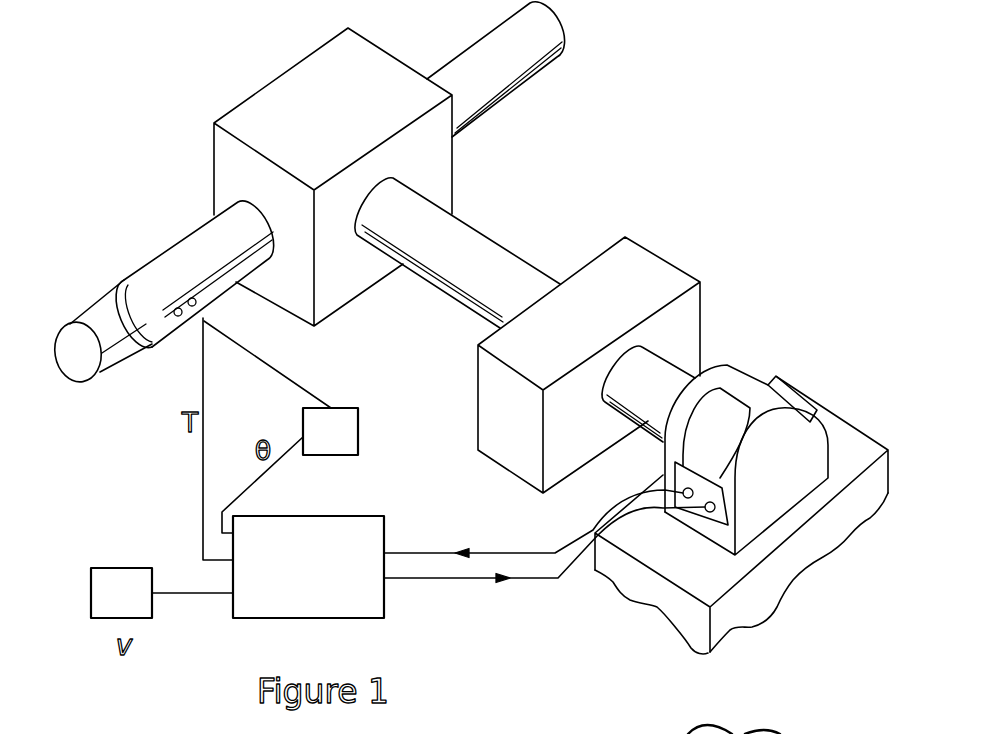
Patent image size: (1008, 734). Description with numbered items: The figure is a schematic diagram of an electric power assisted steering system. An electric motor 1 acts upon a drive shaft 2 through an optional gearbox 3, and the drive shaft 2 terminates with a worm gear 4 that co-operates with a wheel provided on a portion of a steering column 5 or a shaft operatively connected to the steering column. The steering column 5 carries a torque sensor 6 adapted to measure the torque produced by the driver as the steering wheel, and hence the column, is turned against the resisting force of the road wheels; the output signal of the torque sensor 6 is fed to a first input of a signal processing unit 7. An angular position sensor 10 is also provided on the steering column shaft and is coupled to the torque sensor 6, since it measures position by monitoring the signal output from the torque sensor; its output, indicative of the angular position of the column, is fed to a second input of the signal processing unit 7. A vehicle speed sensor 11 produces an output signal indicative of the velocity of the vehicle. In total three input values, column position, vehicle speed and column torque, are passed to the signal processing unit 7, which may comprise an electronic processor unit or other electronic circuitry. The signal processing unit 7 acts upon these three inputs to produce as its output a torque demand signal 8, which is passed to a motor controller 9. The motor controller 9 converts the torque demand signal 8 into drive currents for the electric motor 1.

The electric motor 1 is at (813, 428).
The drive shaft 2 is at (468, 238).
The gearbox 3 is at (577, 322).
The worm gear 4 is at (315, 118).
The steering column 5 is at (543, 103).
The torque sensor 6 is at (150, 265).
The signal processing unit 7 is at (301, 577).
The torque demand signal 8 is at (528, 580).
The motor controller 9 is at (723, 522).
The angular position sensor 10 is at (347, 430).
The vehicle speed sensor 11 is at (104, 582).